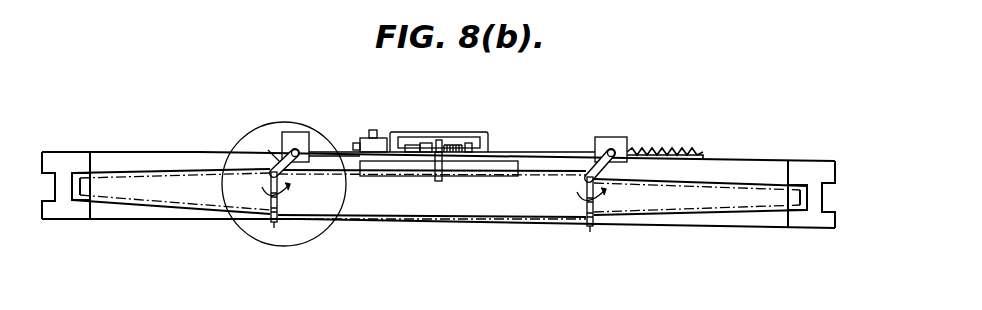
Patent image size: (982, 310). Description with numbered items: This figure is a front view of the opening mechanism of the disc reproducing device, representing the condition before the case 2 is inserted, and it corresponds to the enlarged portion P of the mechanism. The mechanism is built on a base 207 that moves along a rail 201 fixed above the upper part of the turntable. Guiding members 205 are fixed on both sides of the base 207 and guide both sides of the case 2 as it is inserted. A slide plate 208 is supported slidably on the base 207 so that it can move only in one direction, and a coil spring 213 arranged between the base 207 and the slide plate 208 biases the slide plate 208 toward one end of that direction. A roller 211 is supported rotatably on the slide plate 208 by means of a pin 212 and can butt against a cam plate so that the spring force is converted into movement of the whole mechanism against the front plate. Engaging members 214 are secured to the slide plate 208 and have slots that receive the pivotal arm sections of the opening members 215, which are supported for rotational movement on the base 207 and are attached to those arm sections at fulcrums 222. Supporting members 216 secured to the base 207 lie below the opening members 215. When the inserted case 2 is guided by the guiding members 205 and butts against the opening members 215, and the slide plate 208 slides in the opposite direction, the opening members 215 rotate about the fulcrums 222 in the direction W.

The case 2 is at (358, 220).
The rail 201 is at (463, 133).
The guiding members 205 is at (62, 213).
The base 207 is at (130, 162).
The slide plate 208 is at (538, 153).
The roller 211 is at (360, 138).
The pin 212 is at (375, 130).
The coil spring 213 is at (690, 148).
The engaging members 214 is at (298, 132).
The opening members 215 is at (268, 222).
The supporting members 216 is at (272, 222).
The fulcrums 222 is at (264, 148).
The portion P is at (236, 144).
The direction W is at (417, 192).